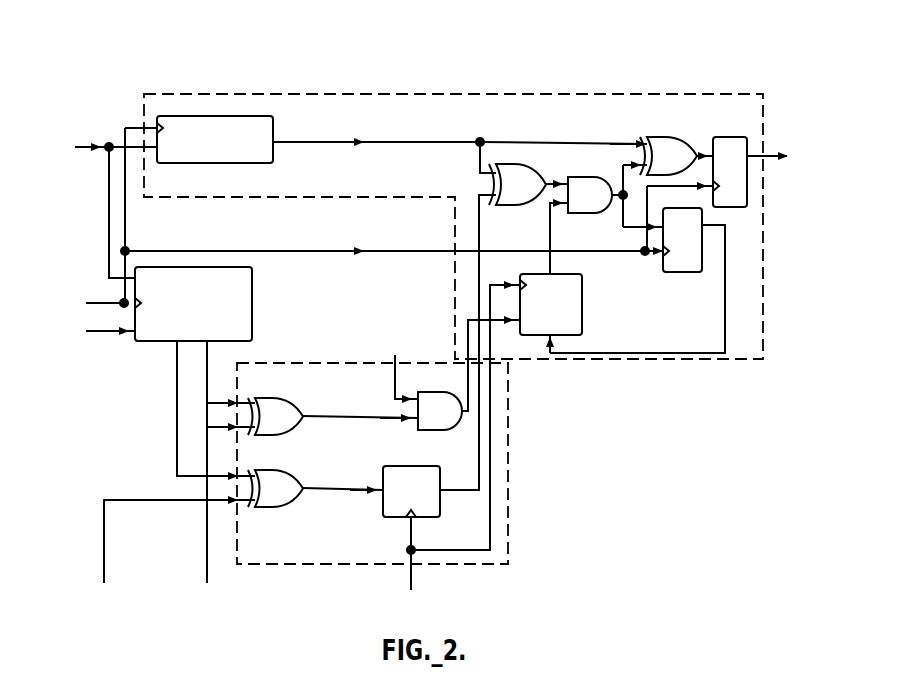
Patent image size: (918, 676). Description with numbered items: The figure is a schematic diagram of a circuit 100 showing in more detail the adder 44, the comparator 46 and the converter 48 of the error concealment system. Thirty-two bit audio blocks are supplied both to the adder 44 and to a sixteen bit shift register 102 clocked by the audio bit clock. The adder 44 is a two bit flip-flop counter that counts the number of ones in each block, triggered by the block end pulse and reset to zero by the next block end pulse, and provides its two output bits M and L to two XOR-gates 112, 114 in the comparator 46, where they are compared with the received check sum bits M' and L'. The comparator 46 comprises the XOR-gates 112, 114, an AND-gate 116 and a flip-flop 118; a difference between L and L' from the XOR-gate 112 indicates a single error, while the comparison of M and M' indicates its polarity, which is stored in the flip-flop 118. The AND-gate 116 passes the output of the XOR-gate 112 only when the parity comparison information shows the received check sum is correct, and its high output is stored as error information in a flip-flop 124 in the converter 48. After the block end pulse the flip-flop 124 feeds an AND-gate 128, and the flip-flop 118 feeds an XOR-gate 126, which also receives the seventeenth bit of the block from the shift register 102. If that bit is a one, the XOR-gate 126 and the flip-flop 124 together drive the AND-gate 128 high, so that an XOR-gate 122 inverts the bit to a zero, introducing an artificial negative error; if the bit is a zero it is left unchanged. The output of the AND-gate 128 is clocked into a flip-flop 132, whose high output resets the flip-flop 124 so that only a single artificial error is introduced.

The circuit 100 is at (724, 71).
The converter 48 is at (750, 98).
The 16 bit shift register 102 is at (262, 117).
The adder 44 is at (252, 280).
The comparator 46 is at (509, 523).
The XOR-gate 112 is at (292, 398).
The XOR-gate 114 is at (292, 470).
The AND-gate 116 is at (428, 392).
The flip-flop 118 is at (420, 466).
The XOR-gate 122 is at (659, 137).
The flip-flop 124 is at (582, 292).
The XOR-gate 126 is at (528, 164).
The AND-gate 128 is at (598, 213).
The flip-flop 132 is at (680, 273).